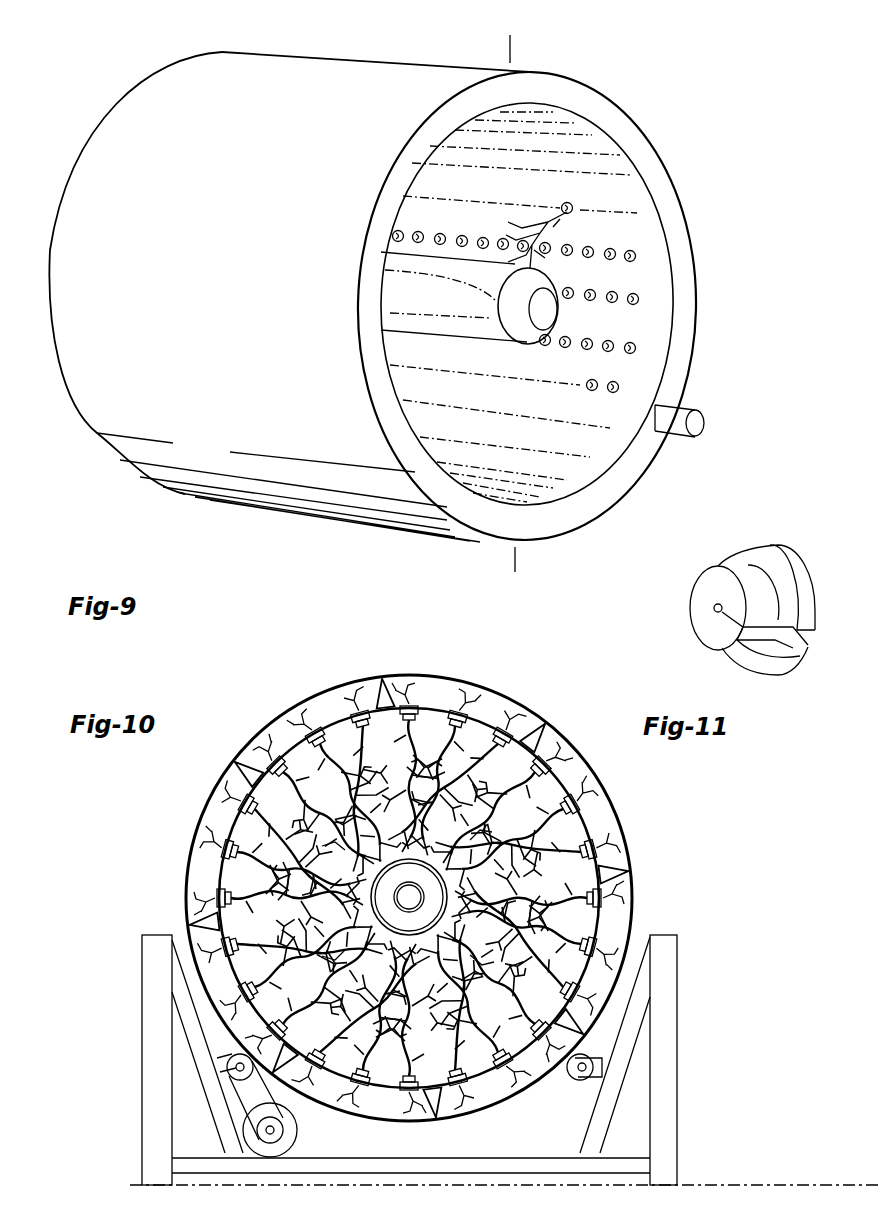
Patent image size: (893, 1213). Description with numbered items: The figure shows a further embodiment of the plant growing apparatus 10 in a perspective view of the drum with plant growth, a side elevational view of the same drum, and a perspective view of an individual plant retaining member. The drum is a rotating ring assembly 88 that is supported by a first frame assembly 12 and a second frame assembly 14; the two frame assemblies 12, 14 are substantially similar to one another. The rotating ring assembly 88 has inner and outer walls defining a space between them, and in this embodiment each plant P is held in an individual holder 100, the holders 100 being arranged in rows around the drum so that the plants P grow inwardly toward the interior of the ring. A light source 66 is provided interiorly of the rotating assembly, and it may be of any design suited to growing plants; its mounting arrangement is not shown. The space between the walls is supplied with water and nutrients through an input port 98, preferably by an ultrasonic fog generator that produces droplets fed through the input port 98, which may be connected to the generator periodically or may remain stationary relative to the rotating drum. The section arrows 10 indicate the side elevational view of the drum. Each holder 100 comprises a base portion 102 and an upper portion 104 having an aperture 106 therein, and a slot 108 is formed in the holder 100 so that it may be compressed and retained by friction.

In FIG. 9, the rotating ring assembly 88 is at (724, 179).
In FIG. 9, the plant P is at (578, 216).
In FIG. 10, the plant P is at (545, 823).
In FIG. 9, the holder 100 is at (640, 300).
In FIG. 11, the holder 100 is at (733, 594).
In FIG. 10, the holder 100 is at (602, 905).
In FIG. 9, the light source 66 is at (518, 315).
In FIG. 10, the light source 66 is at (448, 890).
In FIG. 9, the input port 98 is at (702, 412).
In FIG. 9, the plant growing apparatus 10 is at (465, 35).
In FIG. 11, the base portion 102 is at (778, 546).
In FIG. 11, the upper portion 104 is at (695, 595).
In FIG. 11, the aperture 106 is at (714, 611).
In FIG. 11, the slot 108 is at (808, 636).
In FIG. 10, the first frame assembly 12 is at (141, 1090).
In FIG. 10, the second frame assembly 14 is at (683, 1086).